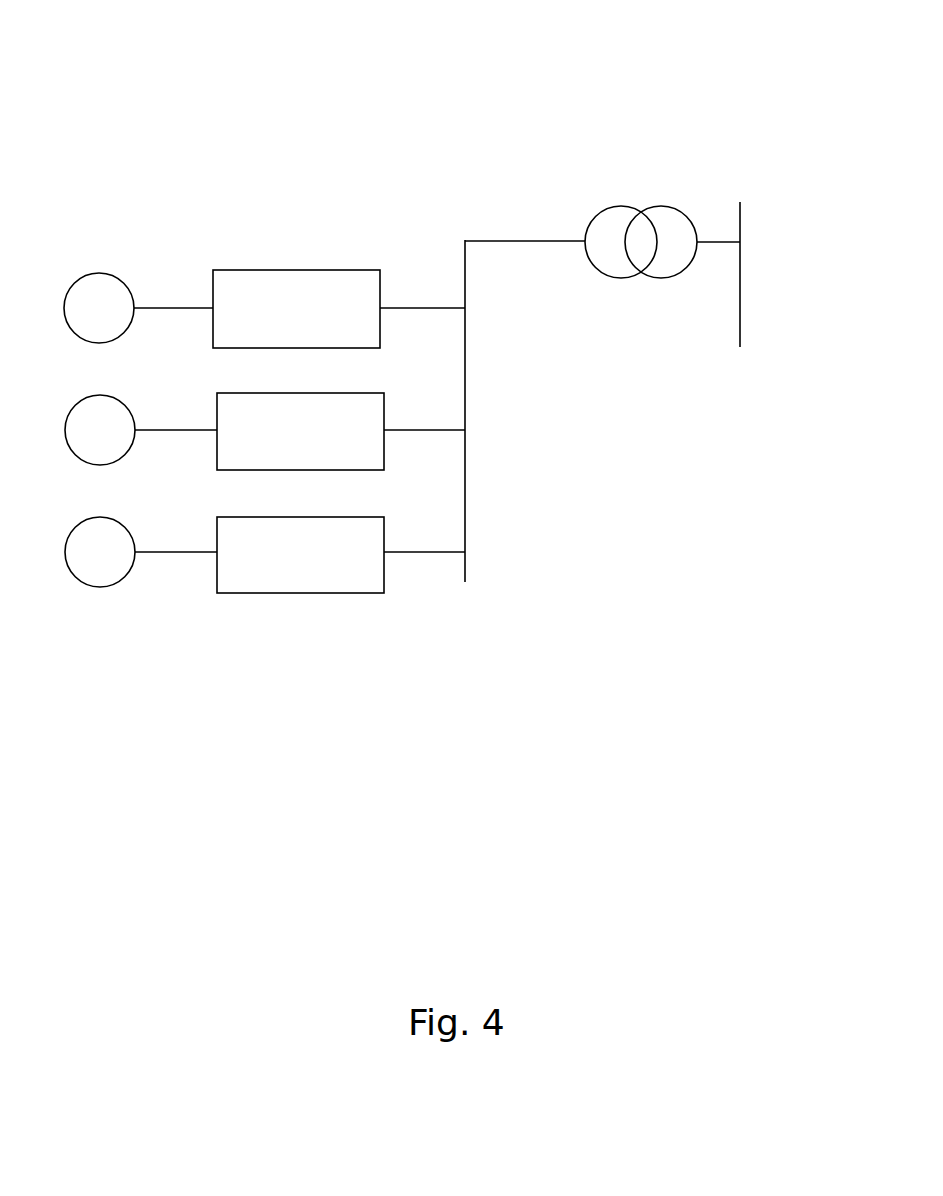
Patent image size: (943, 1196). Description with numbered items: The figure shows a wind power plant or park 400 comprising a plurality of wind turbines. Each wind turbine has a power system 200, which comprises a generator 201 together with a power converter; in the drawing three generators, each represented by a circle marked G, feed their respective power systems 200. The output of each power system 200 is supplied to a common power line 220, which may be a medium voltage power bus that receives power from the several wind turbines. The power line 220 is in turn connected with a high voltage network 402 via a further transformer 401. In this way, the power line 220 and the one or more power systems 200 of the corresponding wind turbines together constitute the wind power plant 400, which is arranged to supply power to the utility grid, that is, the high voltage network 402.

The wind power plant 400 is at (403, 73).
The generator 201 is at (87, 272).
The power system 200 is at (302, 263).
The power line 220 is at (438, 302).
The further transformer 401 is at (653, 200).
The high voltage network 402 is at (748, 227).